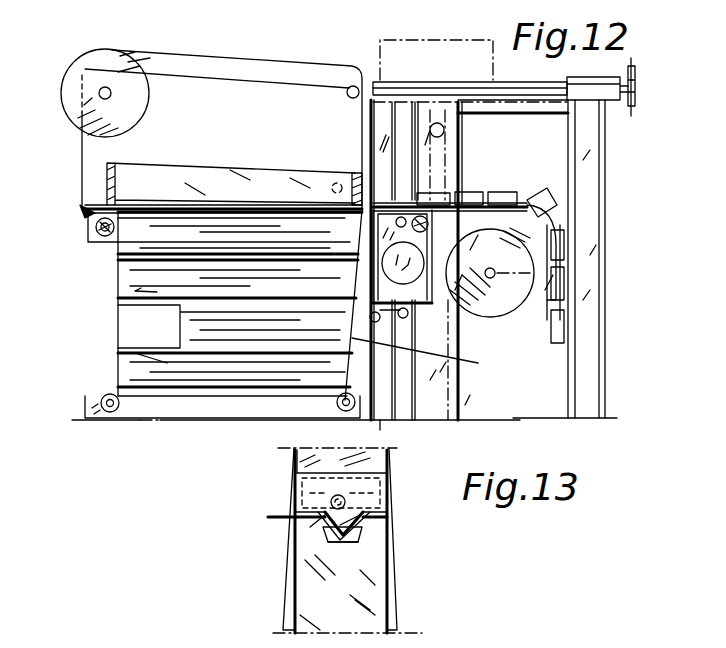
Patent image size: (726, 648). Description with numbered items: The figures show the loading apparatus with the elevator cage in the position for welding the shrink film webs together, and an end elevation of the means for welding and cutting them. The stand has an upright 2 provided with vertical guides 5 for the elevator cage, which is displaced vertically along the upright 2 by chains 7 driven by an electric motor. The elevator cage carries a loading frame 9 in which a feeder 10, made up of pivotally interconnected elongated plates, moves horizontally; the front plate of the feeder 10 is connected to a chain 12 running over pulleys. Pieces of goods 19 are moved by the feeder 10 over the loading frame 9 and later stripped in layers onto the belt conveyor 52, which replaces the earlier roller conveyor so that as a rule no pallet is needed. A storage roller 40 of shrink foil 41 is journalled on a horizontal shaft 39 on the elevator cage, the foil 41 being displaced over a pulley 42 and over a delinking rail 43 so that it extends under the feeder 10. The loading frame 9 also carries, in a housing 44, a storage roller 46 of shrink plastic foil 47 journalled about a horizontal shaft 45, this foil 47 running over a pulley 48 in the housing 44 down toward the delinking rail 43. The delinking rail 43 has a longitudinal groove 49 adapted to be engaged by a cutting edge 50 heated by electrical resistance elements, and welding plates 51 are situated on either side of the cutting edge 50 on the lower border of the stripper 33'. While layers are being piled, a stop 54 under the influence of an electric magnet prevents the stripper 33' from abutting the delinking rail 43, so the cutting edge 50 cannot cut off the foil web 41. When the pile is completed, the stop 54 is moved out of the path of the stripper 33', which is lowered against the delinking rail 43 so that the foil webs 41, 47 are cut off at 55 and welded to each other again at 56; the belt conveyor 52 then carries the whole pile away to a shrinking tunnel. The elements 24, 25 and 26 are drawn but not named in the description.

In FIG. 12, the upright 2 is at (602, 213).
In FIG. 12, the vertical guides 5 is at (393, 128).
In FIG. 12, the chains 7 is at (448, 392).
In FIG. 12, the loading frame 9 is at (84, 212).
In FIG. 12, the feeder 10 is at (514, 185).
In FIG. 12, the chain 12 is at (140, 238).
In FIG. 12, the pieces of goods 19 is at (412, 62).
In FIG. 12, the beam 24 is at (512, 88).
In FIG. 12, the end block 25 is at (603, 90).
In FIG. 12, the adjusting screw 26 is at (634, 108).
In FIG. 12, the stripper 33' is at (340, 167).
In FIG. 13, the stripper 33' is at (373, 450).
In FIG. 12, the horizontal shaft 39 is at (490, 279).
In FIG. 12, the storage roller 40 is at (500, 290).
In FIG. 12, the shrink foil 41 is at (163, 437).
In FIG. 13, the shrink foil 41 is at (287, 595).
In FIG. 12, the pulley 42 is at (370, 318).
In FIG. 12, the delinking rail 43 is at (358, 213).
In FIG. 13, the delinking rail 43 is at (368, 572).
In FIG. 12, the housing 44 is at (97, 147).
In FIG. 12, the horizontal shaft 45 is at (104, 87).
In FIG. 12, the storage roller 46 is at (72, 90).
In FIG. 12, the shrink plastic foil 47 is at (195, 58).
In FIG. 13, the shrink plastic foil 47 is at (268, 517).
In FIG. 12, the pulley 48 is at (349, 88).
In FIG. 13, the longitudinal groove 49 is at (328, 536).
In FIG. 13, the cutting edge 50 is at (340, 533).
In FIG. 13, the welding plates 51 is at (300, 516).
In FIG. 12, the belt conveyor 52 is at (135, 417).
In FIG. 12, the stop 54 is at (333, 185).
In FIG. 13, the cut-off location 55 is at (357, 541).
In FIG. 13, the weld location 56 is at (327, 527).